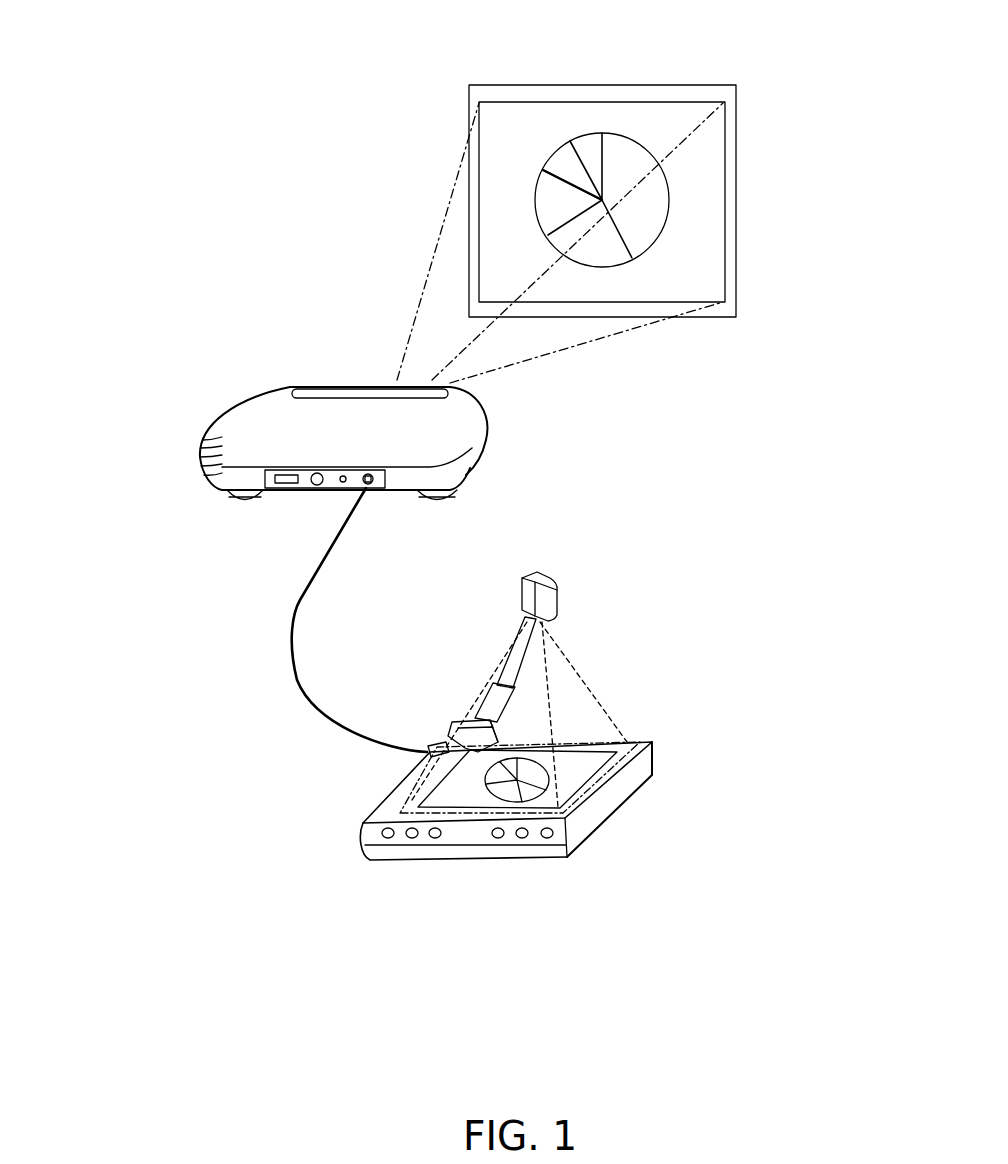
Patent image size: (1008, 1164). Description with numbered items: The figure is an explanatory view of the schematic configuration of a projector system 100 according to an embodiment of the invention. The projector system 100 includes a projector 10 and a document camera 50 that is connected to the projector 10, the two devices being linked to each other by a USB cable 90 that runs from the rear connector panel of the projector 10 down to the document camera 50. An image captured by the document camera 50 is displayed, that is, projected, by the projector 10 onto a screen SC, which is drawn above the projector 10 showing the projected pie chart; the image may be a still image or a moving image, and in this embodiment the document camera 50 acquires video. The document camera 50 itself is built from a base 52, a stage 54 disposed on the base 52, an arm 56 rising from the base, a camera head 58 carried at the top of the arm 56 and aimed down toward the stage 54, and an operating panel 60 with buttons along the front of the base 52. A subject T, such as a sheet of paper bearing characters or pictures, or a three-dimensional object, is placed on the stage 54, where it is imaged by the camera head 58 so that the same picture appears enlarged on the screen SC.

The projector system 100 is at (213, 341).
The projector 10 is at (473, 417).
The screen SC is at (599, 85).
The USB cable 90 is at (295, 635).
The document camera 50 is at (728, 623).
The base 52 is at (590, 827).
The stage 54 is at (638, 745).
The arm 56 is at (508, 638).
The camera head 58 is at (538, 573).
The operating panel 60 is at (470, 835).
The subject T is at (597, 780).